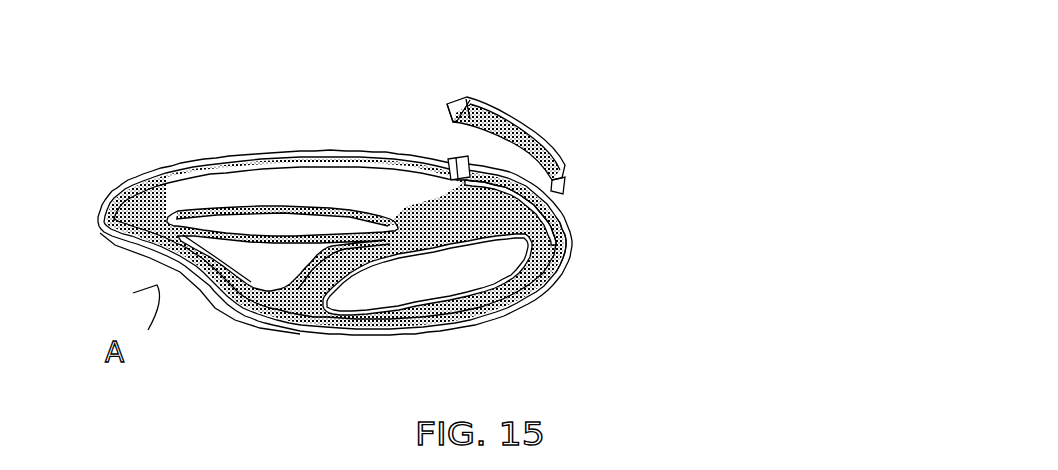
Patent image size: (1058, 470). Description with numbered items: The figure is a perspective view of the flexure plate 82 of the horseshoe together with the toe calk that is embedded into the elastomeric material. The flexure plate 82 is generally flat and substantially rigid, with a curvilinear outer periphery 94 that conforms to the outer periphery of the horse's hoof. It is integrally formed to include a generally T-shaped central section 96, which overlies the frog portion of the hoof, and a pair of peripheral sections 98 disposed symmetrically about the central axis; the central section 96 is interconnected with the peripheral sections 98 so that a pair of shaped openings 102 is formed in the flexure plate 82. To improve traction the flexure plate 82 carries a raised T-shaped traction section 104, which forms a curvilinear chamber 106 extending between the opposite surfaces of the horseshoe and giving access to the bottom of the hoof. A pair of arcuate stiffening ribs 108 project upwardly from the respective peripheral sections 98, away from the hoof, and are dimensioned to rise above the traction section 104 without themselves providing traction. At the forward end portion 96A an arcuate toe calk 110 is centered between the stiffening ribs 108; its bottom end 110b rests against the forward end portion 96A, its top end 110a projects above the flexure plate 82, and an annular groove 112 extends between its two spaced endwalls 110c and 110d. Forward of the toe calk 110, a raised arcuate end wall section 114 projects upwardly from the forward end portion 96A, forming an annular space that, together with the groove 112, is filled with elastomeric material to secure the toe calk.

The flexure plate 82 is at (412, 200).
The curvilinear outer periphery 94 is at (133, 253).
The central section 96 is at (413, 200).
The forward end portion 96A is at (563, 253).
The peripheral sections 98 is at (147, 176).
The shaped openings 102 is at (223, 197).
The raised T-shaped traction section 104 is at (350, 223).
The curvilinear chamber 106 is at (297, 253).
The arcuate stiffening ribs 108 is at (167, 172).
The arcuate toe calk 110 is at (548, 120).
The top end 110a is at (485, 107).
The bottom end 110b is at (567, 200).
The endwall 110c is at (557, 188).
The endwall 110d is at (462, 104).
The annular groove 112 is at (543, 127).
The raised arcuate end wall section 114 is at (567, 227).